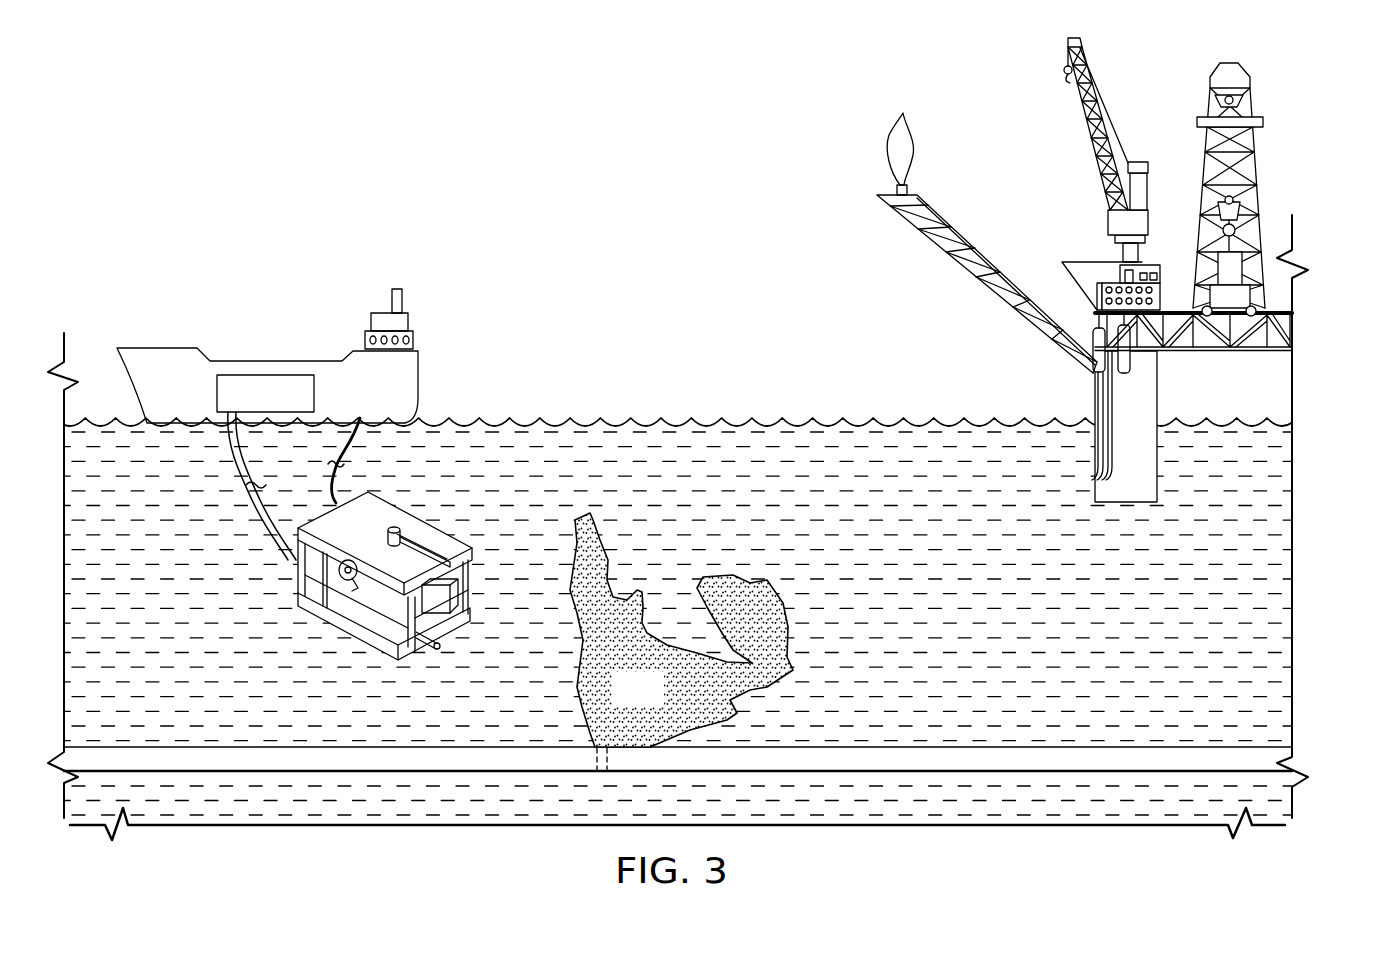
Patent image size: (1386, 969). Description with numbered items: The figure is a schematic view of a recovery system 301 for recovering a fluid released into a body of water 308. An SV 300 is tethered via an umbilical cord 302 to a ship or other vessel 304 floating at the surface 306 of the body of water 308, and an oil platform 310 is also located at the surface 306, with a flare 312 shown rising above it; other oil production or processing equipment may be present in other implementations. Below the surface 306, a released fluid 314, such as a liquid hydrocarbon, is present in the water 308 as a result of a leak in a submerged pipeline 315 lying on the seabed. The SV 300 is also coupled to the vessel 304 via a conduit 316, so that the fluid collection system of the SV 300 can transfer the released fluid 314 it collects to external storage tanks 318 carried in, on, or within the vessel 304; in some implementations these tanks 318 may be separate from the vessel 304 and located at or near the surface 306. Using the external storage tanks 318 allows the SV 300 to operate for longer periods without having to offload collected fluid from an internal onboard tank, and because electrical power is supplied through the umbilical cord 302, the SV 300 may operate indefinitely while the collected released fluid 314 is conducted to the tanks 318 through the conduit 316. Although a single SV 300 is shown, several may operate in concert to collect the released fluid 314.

The SV 300 is at (338, 625).
The recovery system 301 is at (452, 199).
The umbilical cord 302 is at (355, 440).
The vessel 304 is at (170, 348).
The surface 306 is at (867, 423).
The body of water 308 is at (1105, 632).
The oil platform 310 is at (1292, 296).
The flare 312 is at (913, 148).
The released fluid 314 is at (660, 703).
The submerged pipeline 315 is at (1050, 747).
The conduit 316 is at (230, 480).
The external storage tanks 318 is at (314, 395).